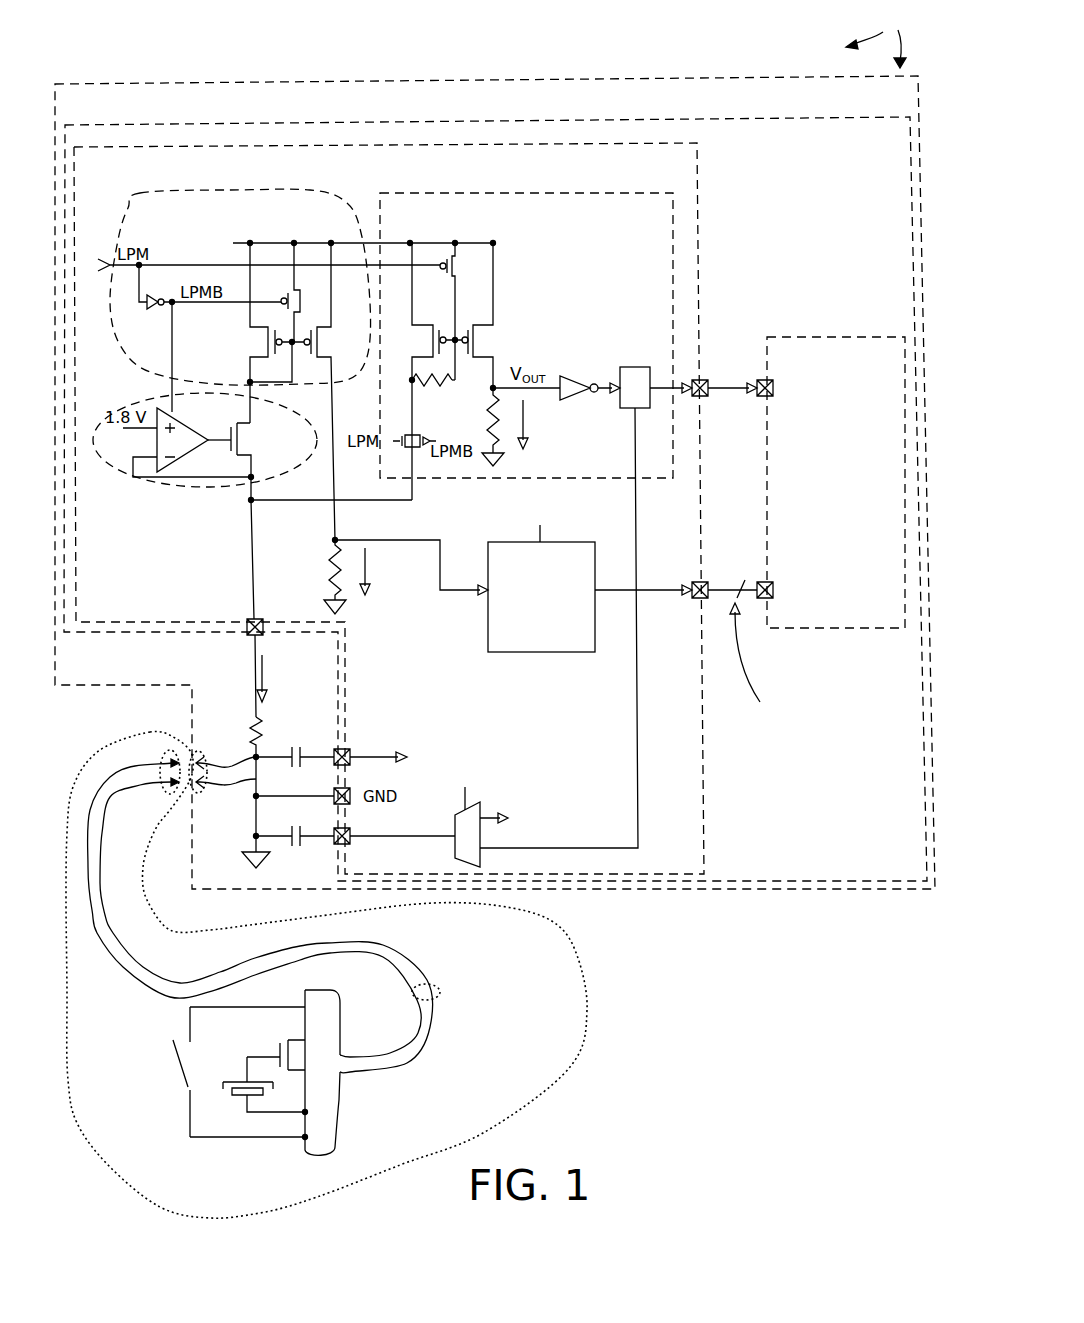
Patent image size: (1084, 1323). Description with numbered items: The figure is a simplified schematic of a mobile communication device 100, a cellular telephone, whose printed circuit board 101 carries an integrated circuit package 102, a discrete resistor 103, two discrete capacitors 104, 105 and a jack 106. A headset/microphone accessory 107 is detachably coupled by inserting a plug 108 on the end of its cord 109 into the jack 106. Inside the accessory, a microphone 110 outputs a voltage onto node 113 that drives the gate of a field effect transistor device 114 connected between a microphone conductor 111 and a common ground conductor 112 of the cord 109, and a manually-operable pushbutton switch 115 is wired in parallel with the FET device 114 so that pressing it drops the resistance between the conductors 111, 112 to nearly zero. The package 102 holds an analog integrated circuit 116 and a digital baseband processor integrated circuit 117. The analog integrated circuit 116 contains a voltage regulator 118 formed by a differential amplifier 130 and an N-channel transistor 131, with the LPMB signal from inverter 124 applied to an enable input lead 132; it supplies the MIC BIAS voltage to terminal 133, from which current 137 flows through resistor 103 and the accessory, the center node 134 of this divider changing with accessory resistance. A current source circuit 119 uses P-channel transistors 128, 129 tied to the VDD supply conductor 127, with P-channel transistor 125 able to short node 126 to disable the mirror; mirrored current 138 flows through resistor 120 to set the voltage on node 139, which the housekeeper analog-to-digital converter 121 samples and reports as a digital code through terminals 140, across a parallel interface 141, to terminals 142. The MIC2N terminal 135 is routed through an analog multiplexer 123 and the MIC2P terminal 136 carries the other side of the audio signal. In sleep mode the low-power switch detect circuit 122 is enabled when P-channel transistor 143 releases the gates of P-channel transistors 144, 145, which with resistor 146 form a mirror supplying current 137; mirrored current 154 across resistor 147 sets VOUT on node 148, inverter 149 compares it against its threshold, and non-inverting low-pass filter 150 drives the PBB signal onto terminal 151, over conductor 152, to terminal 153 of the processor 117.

The mobile communication device 100 is at (876, 40).
The printed circuit board 101 is at (722, 76).
The integrated circuit package 102 is at (845, 117).
The discrete resistor 103 is at (267, 722).
The discrete capacitor 104 is at (297, 746).
The discrete capacitor 105 is at (297, 848).
The accessory connector 106 is at (203, 752).
The headset/microphone accessory 107 is at (590, 1006).
The plug 108 is at (166, 792).
The cord 109 is at (307, 918).
The microphone 110 is at (220, 1107).
The microphone conductor 111 is at (120, 962).
The common ground conductor 112 is at (130, 952).
The node 113 is at (245, 1058).
The field effect transistor device 114 is at (279, 1043).
The manually-operable switch 115 is at (138, 1072).
The analog integrated circuit 116 is at (700, 152).
The digital baseband processor integrated circuit 117 is at (823, 337).
The voltage regulator 118 is at (120, 393).
The current source circuit 119 is at (275, 191).
The resistor 120 is at (329, 566).
The housekeeper analog-to-digital converter 121 is at (536, 652).
The low-power switch detect circuit 122 is at (674, 215).
The analog multiplexer 123 is at (482, 796).
The inverter 124 is at (150, 312).
The P-channel transistor 125 is at (292, 301).
The node 126 is at (293, 355).
The VDD supply conductor 127 is at (273, 243).
The P-channel transistor 128 is at (250, 343).
The P-channel transistor 129 is at (325, 343).
The differential amplifier 130 is at (183, 452).
The N-channel transistor 131 is at (253, 436).
The enable input lead 132 is at (176, 411).
The MIC BIAS terminal 133 is at (249, 618).
The center node 134 is at (277, 757).
The MIC2N terminal 135 is at (350, 842).
The MIC2P terminal 136 is at (350, 762).
The current 137 is at (270, 670).
The mirrored current 138 is at (372, 566).
The node 139 is at (358, 540).
The terminals 140 is at (697, 582).
The parallel interface 141 is at (732, 581).
The terminals 142 is at (770, 582).
The P-channel transistor 143 is at (455, 266).
The P-channel transistor 144 is at (430, 319).
The P-channel transistor 145 is at (493, 327).
The resistor 146 is at (426, 385).
The resistor 147 is at (490, 424).
The node 148 is at (494, 380).
The inverter 149 is at (574, 376).
The non-inverting low-pass filter 150 is at (631, 367).
The terminal 151 is at (704, 397).
The conductor 152 is at (737, 392).
The terminal 153 is at (770, 397).
The mirrored current 154 is at (531, 421).